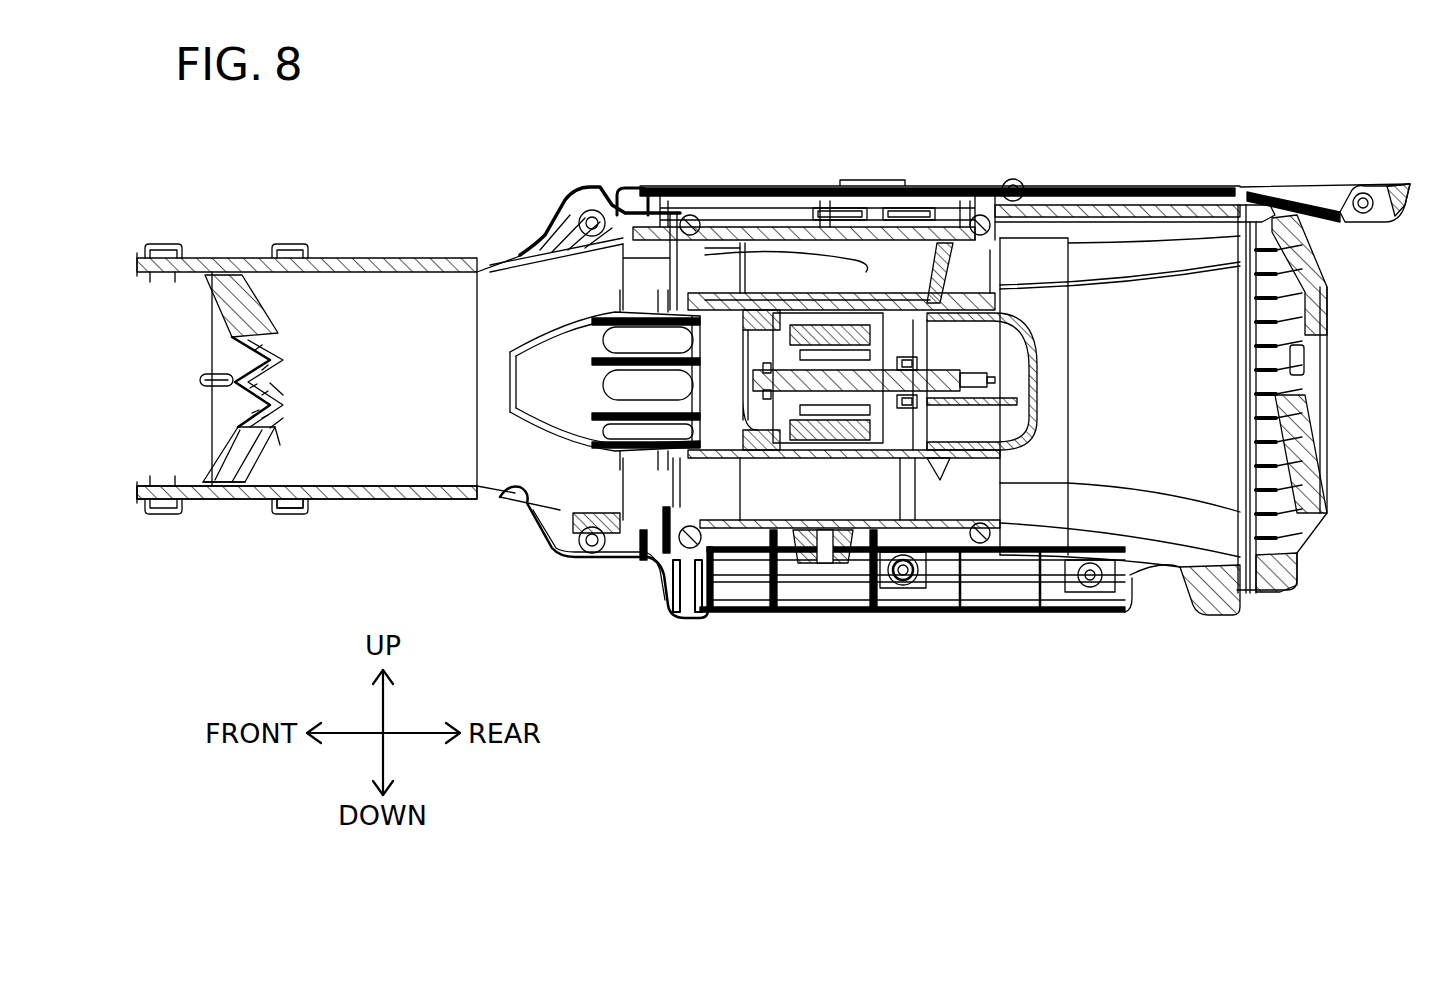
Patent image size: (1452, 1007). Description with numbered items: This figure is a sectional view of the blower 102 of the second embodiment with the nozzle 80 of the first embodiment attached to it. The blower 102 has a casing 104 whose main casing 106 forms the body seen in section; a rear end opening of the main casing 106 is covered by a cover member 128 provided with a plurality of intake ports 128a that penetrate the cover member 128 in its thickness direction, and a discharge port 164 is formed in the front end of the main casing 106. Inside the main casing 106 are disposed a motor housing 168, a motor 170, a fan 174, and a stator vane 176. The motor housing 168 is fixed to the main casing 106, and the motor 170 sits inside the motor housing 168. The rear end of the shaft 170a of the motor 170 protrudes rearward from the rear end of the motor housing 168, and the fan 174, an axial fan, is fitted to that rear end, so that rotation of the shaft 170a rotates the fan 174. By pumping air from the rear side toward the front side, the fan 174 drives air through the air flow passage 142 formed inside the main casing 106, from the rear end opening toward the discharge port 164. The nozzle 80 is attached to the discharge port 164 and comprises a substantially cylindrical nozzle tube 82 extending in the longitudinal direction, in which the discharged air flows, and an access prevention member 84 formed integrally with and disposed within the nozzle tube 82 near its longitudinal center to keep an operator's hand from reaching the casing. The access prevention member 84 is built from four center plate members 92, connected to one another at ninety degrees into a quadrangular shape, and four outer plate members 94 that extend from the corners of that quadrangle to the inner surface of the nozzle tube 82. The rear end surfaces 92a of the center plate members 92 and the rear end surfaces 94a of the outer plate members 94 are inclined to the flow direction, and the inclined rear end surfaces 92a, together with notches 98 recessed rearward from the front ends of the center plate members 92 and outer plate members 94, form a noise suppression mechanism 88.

The nozzle 80 is at (447, 514).
The nozzle tube 82 is at (387, 494).
The access prevention member 84 is at (284, 514).
The noise suppression mechanism 88 is at (266, 303).
The center plate members 92 is at (276, 350).
The rear end surfaces 92a is at (284, 419).
The outer plate members 94 is at (228, 290).
The rear end surfaces 94a is at (292, 472).
The notches 98 is at (212, 303).
The blower 102 is at (1338, 404).
The casing 104 is at (1153, 602).
The main casing 106 is at (1038, 588).
The cover member 128 is at (1306, 311).
The intake ports 128a is at (1286, 378).
The air flow passage 142 is at (1143, 335).
The discharge port 164 is at (503, 500).
The motor housing 168 is at (792, 458).
The motor 170 is at (758, 452).
The shaft 170a is at (824, 454).
The fan 174 is at (940, 290).
The stator vane 176 is at (737, 275).